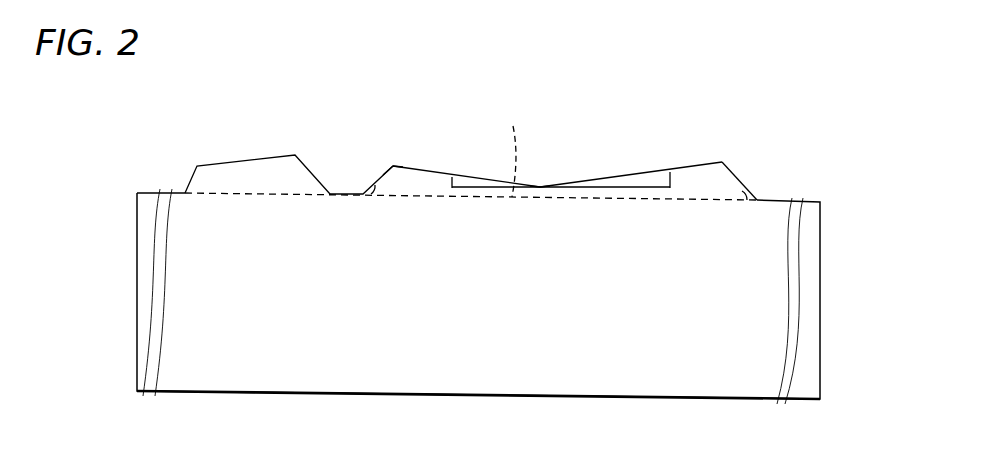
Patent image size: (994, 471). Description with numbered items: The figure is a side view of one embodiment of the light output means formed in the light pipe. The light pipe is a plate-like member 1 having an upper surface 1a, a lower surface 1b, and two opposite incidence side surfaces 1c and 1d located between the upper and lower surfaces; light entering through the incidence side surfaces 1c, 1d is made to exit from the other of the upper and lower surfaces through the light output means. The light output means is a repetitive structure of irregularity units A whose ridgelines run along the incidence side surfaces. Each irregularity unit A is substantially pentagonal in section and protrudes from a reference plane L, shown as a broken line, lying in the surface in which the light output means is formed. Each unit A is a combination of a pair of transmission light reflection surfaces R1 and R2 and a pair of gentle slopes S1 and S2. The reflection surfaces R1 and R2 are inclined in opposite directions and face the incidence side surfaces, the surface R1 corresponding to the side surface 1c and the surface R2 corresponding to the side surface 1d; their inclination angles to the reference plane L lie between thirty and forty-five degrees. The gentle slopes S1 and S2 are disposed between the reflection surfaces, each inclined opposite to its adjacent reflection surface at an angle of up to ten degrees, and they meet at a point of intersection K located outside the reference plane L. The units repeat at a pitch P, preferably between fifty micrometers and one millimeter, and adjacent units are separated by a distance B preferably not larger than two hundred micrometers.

The plate-like member 1 is at (645, 368).
The upper surface 1a is at (257, 154).
The lower surface 1b is at (318, 394).
The incidence side surface 1c is at (135, 247).
The incidence side surface 1d is at (822, 278).
The irregularity unit A is at (648, 153).
The distance between adjacent irregularity units B is at (347, 191).
The transmission light reflection surface R1 is at (737, 172).
The transmission light reflection surface R2 is at (385, 172).
The gentle slope S1 is at (606, 176).
The gentle slope S2 is at (463, 174).
The point of intersection K is at (542, 185).
The reference plane L is at (513, 154).
The repetition pitch P is at (332, 186).